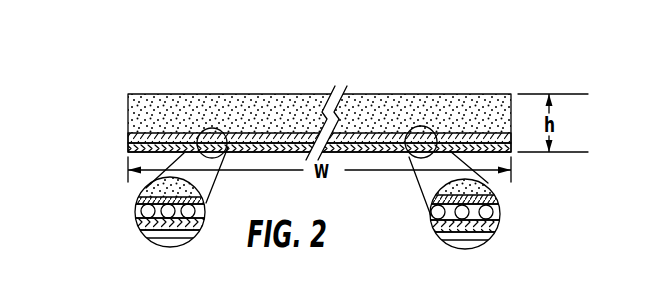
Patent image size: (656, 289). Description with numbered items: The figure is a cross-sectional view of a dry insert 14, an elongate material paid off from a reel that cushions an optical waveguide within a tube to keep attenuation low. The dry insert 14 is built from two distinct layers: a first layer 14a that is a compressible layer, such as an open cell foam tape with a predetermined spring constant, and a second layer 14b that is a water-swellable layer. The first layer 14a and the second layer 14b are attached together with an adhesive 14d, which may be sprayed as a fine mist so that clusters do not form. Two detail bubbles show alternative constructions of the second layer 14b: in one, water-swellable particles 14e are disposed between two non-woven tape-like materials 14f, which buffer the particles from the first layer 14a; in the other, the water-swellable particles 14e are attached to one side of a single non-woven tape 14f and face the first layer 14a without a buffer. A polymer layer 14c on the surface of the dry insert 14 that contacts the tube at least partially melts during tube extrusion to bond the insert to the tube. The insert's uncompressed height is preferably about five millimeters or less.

The dry insert 14 is at (160, 95).
The first layer 14a is at (128, 118).
The second layer 14b is at (128, 139).
The polymer layer 14c is at (128, 151).
The adhesive 14d is at (147, 210).
The water-swellable particles 14e is at (207, 207).
The non-woven tape 14f is at (135, 223).